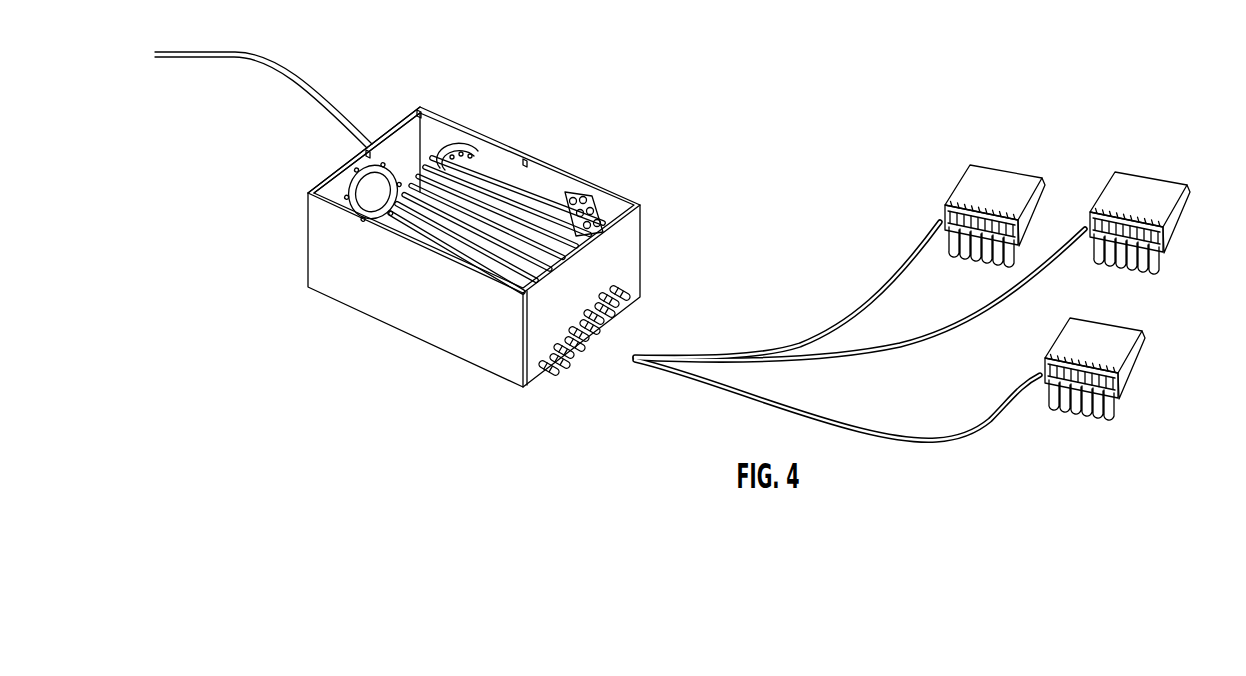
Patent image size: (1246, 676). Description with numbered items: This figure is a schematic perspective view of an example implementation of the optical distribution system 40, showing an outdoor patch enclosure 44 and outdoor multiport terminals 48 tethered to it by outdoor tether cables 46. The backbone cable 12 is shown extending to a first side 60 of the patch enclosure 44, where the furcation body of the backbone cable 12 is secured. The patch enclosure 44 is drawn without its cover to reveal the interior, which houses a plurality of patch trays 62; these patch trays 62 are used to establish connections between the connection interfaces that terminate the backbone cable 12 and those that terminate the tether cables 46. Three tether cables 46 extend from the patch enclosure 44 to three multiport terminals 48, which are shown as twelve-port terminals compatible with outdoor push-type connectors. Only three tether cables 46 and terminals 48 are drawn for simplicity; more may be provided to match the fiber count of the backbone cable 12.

The backbone cable 12 is at (259, 48).
The optical distribution system 40 is at (527, 96).
The patch enclosure 44 is at (367, 318).
The tether cables 46 is at (902, 266).
The multiport terminals 48 is at (963, 182).
The first side 60 is at (403, 130).
The patch trays 62 is at (535, 195).